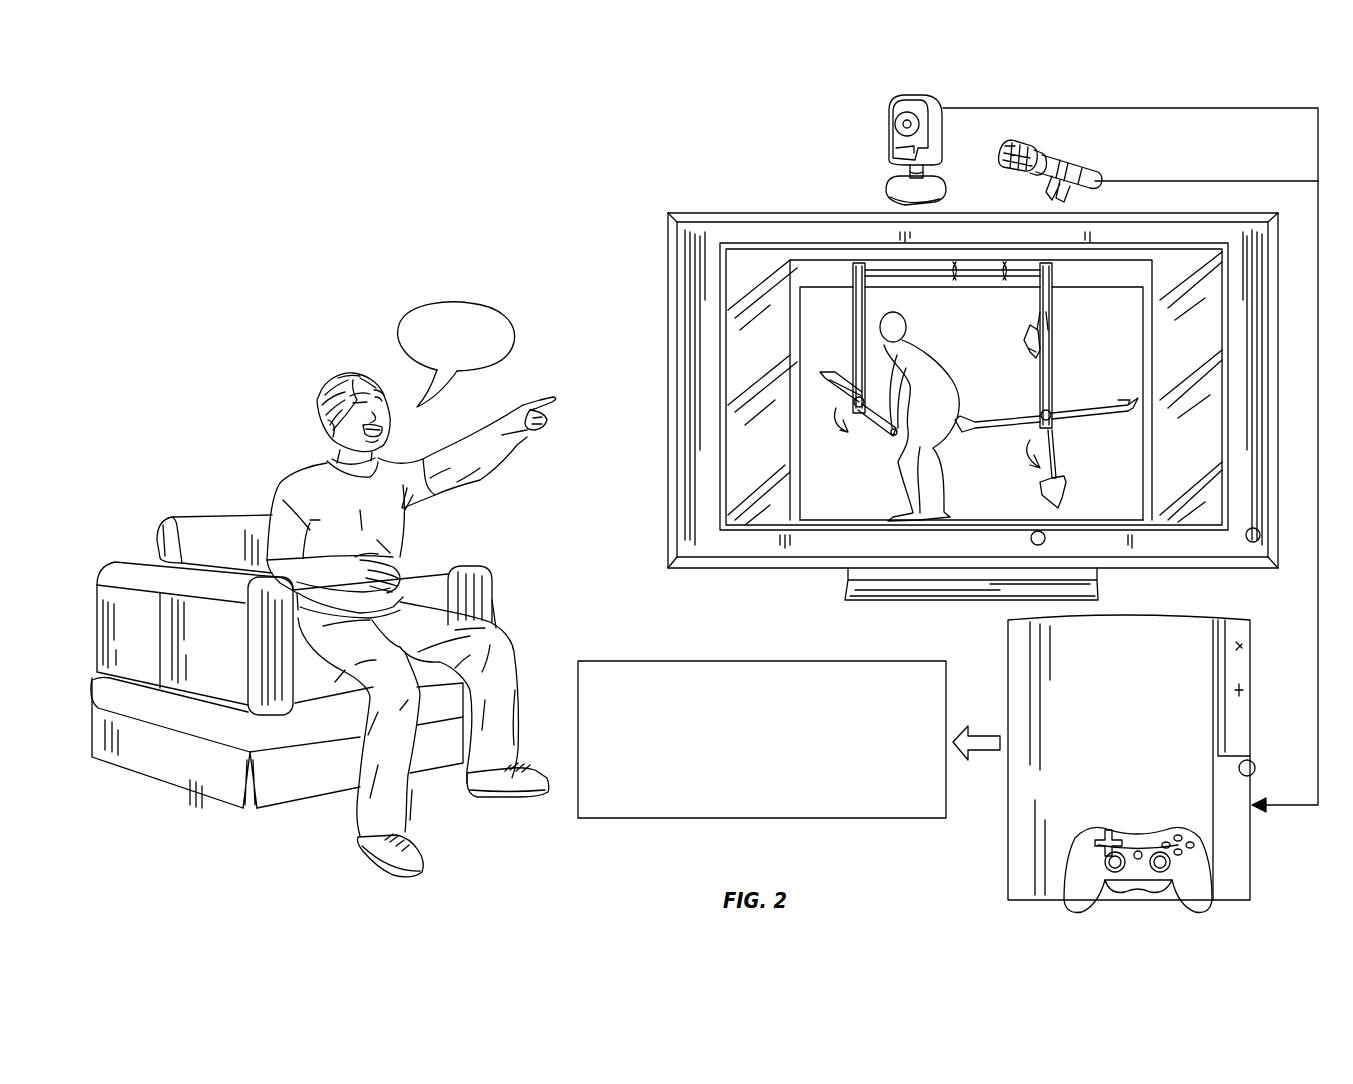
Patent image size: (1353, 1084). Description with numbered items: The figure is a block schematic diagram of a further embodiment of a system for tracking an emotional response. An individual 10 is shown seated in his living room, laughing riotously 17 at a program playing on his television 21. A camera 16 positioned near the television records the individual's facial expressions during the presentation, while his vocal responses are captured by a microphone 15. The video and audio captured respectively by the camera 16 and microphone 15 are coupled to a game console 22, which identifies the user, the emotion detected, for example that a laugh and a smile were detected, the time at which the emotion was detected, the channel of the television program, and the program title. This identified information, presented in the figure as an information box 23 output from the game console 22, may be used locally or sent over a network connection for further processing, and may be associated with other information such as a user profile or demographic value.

The individual 10 is at (278, 487).
The microphone 15 is at (1038, 160).
The camera 16 is at (889, 142).
The laughing riotously 17 is at (432, 305).
The television 21 is at (698, 213).
The game console 22 is at (1008, 840).
The emotion detection information box 23 is at (578, 812).